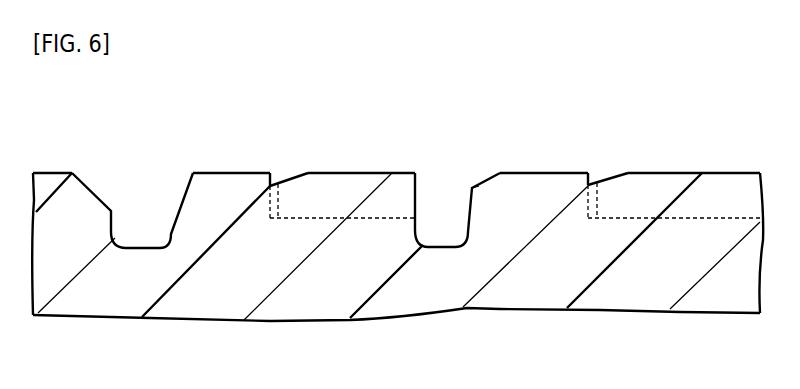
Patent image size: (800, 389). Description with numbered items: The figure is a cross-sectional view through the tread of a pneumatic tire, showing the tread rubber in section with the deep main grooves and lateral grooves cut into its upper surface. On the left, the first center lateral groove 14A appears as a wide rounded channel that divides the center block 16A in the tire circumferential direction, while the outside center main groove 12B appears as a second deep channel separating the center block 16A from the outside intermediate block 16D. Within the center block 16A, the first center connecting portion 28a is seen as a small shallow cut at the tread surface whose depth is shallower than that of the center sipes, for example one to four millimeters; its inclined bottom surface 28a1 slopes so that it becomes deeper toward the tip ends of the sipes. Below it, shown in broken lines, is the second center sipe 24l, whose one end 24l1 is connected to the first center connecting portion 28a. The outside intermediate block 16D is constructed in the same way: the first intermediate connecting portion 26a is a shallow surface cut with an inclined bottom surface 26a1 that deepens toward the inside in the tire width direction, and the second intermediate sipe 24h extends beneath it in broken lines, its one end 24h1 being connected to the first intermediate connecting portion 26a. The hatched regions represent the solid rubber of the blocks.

The outside center main groove 12B is at (443, 218).
The first center lateral groove 14A is at (148, 218).
The center block 16A is at (240, 180).
The outside intermediate block 16D is at (557, 187).
The first center connecting portion 28a is at (275, 175).
The inclined bottom surface 28a1 is at (290, 176).
The first intermediate connecting portion 26a is at (593, 175).
The inclined bottom surface 26a1 is at (609, 174).
The second center sipe 24l is at (343, 208).
The one end of the second center sipe 24l1 is at (272, 213).
The second intermediate sipe 24h is at (668, 207).
The one end of the second intermediate sipe 24h1 is at (590, 218).